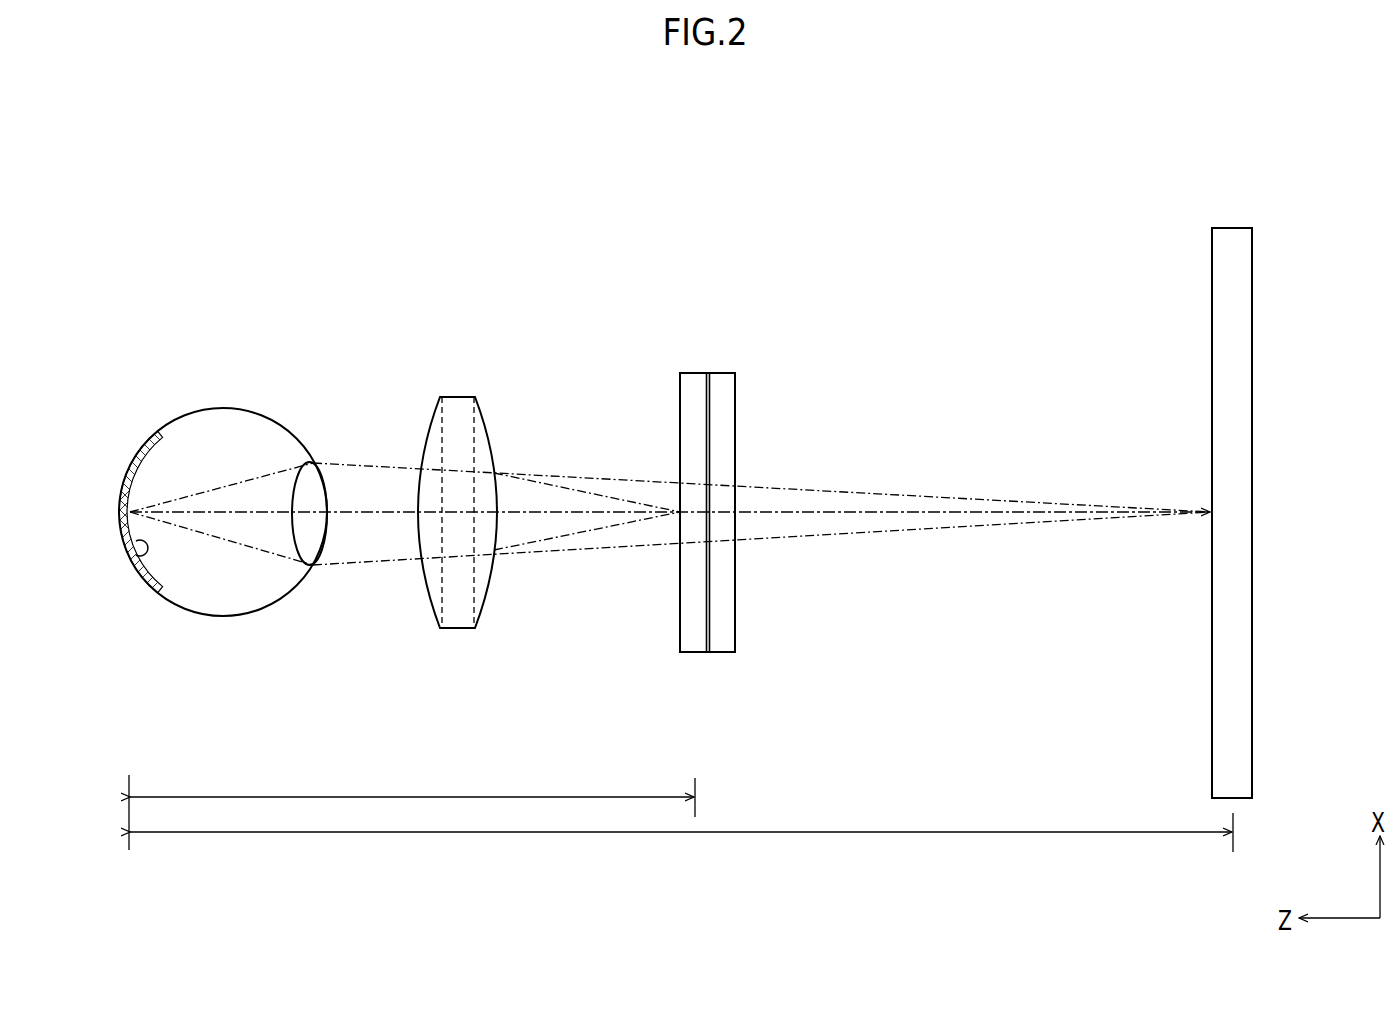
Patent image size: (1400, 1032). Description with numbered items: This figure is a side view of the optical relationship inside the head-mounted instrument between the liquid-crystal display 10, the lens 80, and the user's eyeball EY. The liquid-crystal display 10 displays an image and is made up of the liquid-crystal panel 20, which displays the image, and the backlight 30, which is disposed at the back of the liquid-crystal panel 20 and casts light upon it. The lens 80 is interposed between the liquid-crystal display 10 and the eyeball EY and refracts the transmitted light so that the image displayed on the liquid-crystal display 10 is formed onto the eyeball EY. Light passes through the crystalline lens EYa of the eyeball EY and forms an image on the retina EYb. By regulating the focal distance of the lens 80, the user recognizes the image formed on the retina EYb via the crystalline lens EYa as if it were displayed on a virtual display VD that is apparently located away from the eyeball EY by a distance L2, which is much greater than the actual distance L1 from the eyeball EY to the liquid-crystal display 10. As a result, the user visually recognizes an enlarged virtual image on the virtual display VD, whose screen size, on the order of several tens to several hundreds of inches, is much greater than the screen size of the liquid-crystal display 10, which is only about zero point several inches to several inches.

The liquid-crystal display 10 is at (707, 454).
The liquid-crystal panel 20 is at (690, 372).
The backlight 30 is at (722, 372).
The lens 80 is at (455, 397).
The eyeball EY is at (184, 417).
The crystalline lens EYa is at (296, 487).
The retina EYb is at (133, 562).
The virtual display VD is at (1236, 228).
The distance from the eyeball to the liquid-crystal display L1 is at (412, 803).
The distance from the eyeball to the virtual display L2 is at (681, 824).